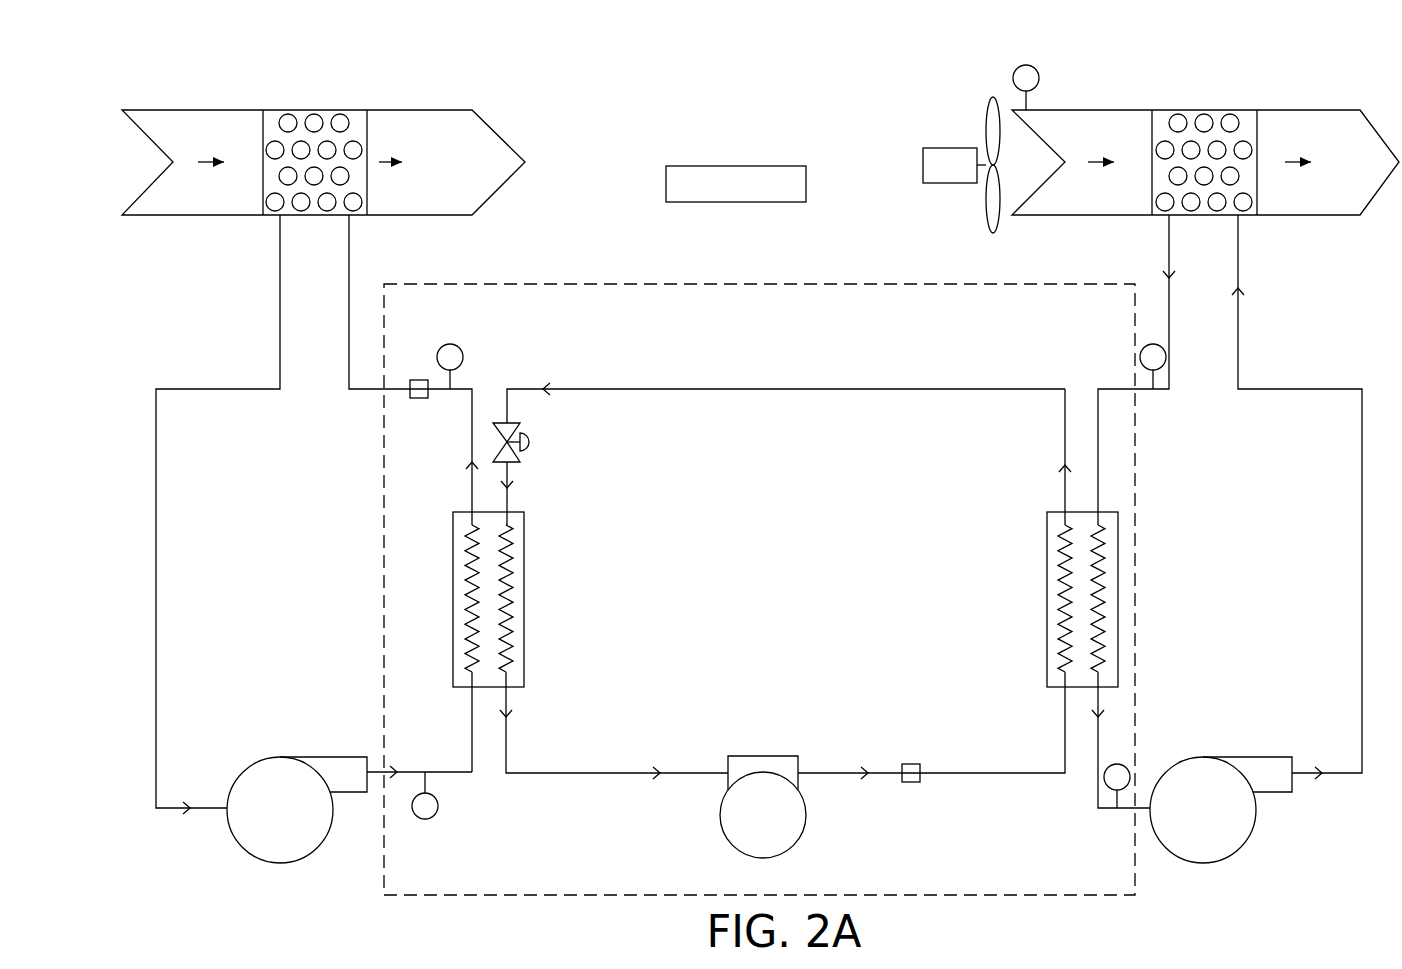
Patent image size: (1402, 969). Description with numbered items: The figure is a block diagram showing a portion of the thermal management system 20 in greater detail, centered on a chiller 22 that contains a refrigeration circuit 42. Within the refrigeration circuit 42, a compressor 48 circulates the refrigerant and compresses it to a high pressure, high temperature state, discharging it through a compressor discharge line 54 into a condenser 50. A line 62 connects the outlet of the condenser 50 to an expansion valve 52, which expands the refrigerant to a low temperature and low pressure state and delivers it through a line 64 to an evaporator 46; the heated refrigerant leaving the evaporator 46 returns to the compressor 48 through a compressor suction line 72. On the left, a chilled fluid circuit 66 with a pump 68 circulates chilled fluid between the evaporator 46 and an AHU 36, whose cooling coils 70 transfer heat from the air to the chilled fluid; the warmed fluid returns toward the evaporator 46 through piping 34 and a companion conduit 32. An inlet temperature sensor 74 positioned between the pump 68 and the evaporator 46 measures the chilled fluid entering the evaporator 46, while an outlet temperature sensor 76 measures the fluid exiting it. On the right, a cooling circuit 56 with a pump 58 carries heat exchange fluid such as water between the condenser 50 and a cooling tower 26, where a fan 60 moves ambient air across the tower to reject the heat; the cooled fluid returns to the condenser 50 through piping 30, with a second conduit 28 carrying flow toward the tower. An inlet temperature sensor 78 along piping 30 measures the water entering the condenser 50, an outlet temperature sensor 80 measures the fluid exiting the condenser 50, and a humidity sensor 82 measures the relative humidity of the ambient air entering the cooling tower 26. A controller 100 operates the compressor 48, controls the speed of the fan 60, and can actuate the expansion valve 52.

The thermal management system 20 is at (557, 56).
The chiller 22 is at (596, 303).
The cooling tower 26 is at (1100, 118).
The cooling tower inlet conduit 28 is at (1240, 258).
The piping 30 is at (1169, 252).
The chilled fluid return conduit 32 is at (349, 258).
The piping 34 is at (280, 284).
The AHU 36 is at (193, 118).
The refrigeration circuit 42 is at (680, 375).
The evaporator 46 is at (516, 548).
The compressor 48 is at (785, 765).
The condenser 50 is at (1056, 556).
The expansion valve 52 is at (531, 442).
The compressor discharge line 54 is at (838, 775).
The cooling circuit 56 is at (1277, 366).
The pump 58 is at (1178, 775).
The fan 60 is at (924, 160).
The line 62 is at (608, 392).
The line 64 is at (507, 478).
The chilled fluid circuit 66 is at (190, 372).
The pump 68 is at (253, 777).
The cooling coils 70 is at (299, 207).
The compressor suction line 72 is at (520, 775).
The inlet temperature sensor 74 is at (438, 806).
The outlet temperature sensor 76 is at (463, 357).
The inlet temperature sensor 78 is at (1166, 357).
The outlet temperature sensor 80 is at (1104, 787).
The humidity sensor 82 is at (1013, 78).
The controller 100 is at (797, 176).